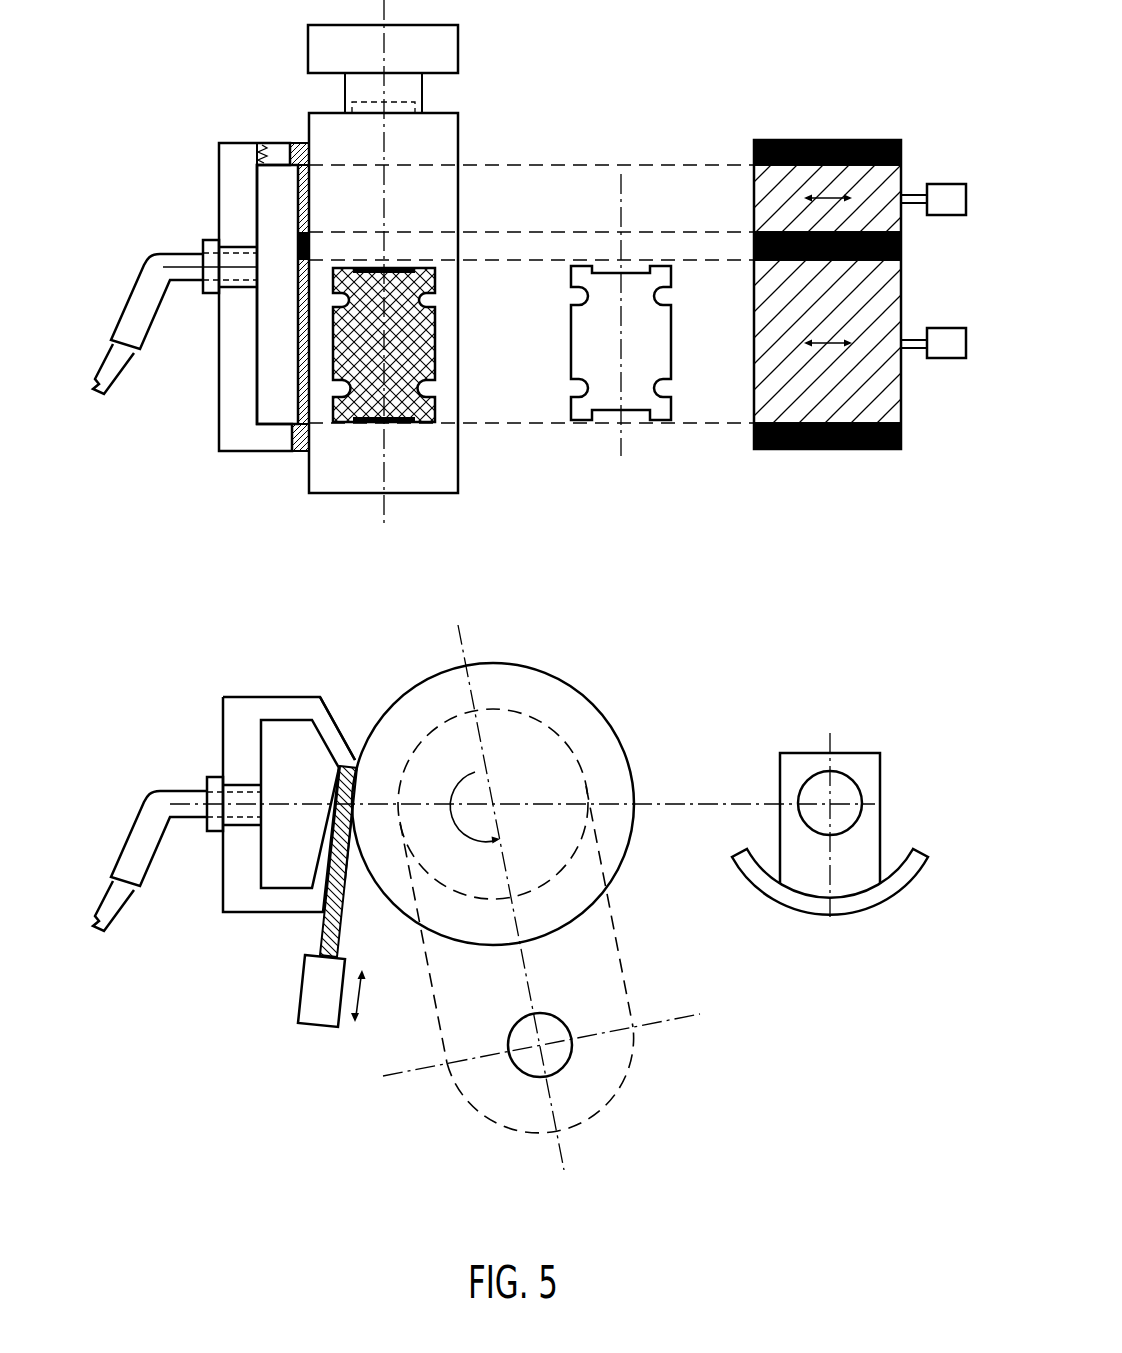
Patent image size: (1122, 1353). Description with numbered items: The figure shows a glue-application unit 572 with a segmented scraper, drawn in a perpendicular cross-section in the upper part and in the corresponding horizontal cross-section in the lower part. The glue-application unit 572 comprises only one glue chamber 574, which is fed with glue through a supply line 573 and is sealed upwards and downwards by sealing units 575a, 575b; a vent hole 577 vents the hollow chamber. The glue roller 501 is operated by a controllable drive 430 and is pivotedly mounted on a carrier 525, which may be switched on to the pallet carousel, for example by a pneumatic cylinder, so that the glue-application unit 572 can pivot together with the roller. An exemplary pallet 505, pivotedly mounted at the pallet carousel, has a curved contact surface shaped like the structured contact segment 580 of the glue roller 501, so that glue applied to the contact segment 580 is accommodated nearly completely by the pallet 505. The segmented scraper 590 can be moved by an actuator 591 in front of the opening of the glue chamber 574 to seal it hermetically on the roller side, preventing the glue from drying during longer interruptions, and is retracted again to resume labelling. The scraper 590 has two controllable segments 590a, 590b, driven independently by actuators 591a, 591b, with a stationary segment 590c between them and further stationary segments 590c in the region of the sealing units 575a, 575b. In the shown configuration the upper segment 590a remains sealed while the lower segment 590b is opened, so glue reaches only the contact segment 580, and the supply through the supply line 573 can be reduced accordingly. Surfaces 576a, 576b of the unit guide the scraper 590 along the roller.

The controllable drive 430 is at (450, 33).
The glue roller 501 is at (450, 128).
The pallet 505 is at (595, 410).
The carrier 525 is at (608, 977).
The glue-application unit 572 is at (227, 172).
The supply line 573 is at (130, 312).
The glue chamber 574 is at (270, 387).
The sealing unit 575a is at (285, 150).
The sealing unit 575b is at (290, 440).
The upper guide surface 576a is at (340, 735).
The lower guide surface 576b is at (348, 862).
The vent hole 577 is at (257, 150).
The contact segment 580 is at (437, 313).
The segmented scraper 590 is at (293, 222).
The controllable segment 590a is at (754, 198).
The controllable segment 590b is at (752, 372).
The stationary segment 590c is at (752, 148).
The actuator 591 is at (320, 1015).
The actuator 591a is at (935, 183).
The actuator 591b is at (935, 327).